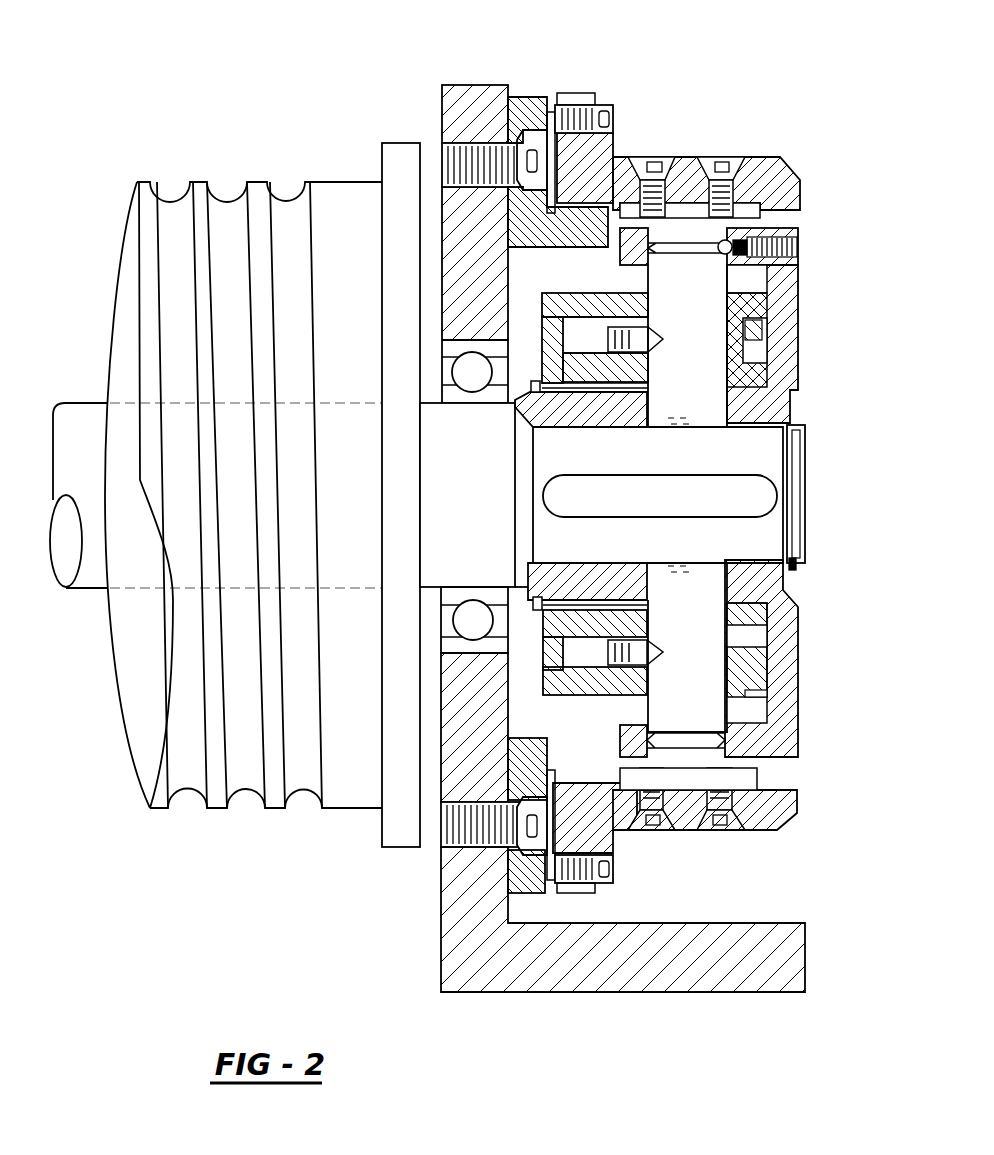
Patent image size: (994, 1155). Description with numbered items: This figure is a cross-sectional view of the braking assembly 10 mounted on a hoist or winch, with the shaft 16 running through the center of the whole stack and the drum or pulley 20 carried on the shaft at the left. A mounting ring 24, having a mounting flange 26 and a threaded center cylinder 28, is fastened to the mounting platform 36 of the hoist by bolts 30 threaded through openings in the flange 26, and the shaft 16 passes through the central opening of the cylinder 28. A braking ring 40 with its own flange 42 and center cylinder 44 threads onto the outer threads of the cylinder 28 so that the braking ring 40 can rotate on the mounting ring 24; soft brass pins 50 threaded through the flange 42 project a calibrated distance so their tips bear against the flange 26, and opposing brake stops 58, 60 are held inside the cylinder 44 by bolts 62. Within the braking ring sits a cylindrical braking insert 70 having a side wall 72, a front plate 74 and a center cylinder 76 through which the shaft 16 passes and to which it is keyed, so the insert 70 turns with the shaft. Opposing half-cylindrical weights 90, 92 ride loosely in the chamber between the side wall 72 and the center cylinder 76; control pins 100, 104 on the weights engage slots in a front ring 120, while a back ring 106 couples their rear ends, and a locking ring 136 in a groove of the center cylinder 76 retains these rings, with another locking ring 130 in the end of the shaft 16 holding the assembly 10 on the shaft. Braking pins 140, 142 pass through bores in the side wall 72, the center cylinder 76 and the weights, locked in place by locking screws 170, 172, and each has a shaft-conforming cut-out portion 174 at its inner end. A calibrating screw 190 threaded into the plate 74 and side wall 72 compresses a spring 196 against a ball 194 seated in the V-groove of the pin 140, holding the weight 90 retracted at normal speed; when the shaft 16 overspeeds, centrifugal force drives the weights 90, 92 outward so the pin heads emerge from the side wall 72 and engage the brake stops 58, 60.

The braking assembly 10 is at (602, 526).
The shaft 16 is at (103, 433).
The pulley 20 is at (280, 810).
The mounting ring 24 is at (535, 92).
The mounting flange 26 is at (527, 873).
The threaded center cylinder 28 is at (567, 227).
The bolts 30 is at (477, 163).
The mounting platform 36 is at (623, 970).
The braking ring 40 is at (785, 830).
The flange 42 is at (587, 173).
The center cylinder 44 is at (797, 177).
The pins 50 is at (590, 870).
The brake stop 58 is at (750, 213).
The brake stop 60 is at (743, 778).
The bolts 62 is at (708, 165).
The braking insert 70 is at (798, 702).
The side wall 72 is at (733, 742).
The front plate 74 is at (790, 615).
The center cylinder 76 is at (597, 577).
The weight 90 is at (627, 315).
The weight 92 is at (583, 697).
The control pin 100 is at (760, 357).
The control pin 104 is at (803, 538).
The back ring 106 is at (553, 637).
The front ring 120 is at (757, 663).
The locking ring 130 is at (790, 423).
The locking ring 136 is at (518, 407).
The braking pin 140 is at (710, 360).
The braking pin 142 is at (703, 597).
The locking screw 170 is at (583, 317).
The locking screw 172 is at (540, 692).
The cut-out portion 174 is at (673, 418).
The calibrating screw 190 is at (800, 248).
The ball 194 is at (717, 258).
The spring 196 is at (745, 245).